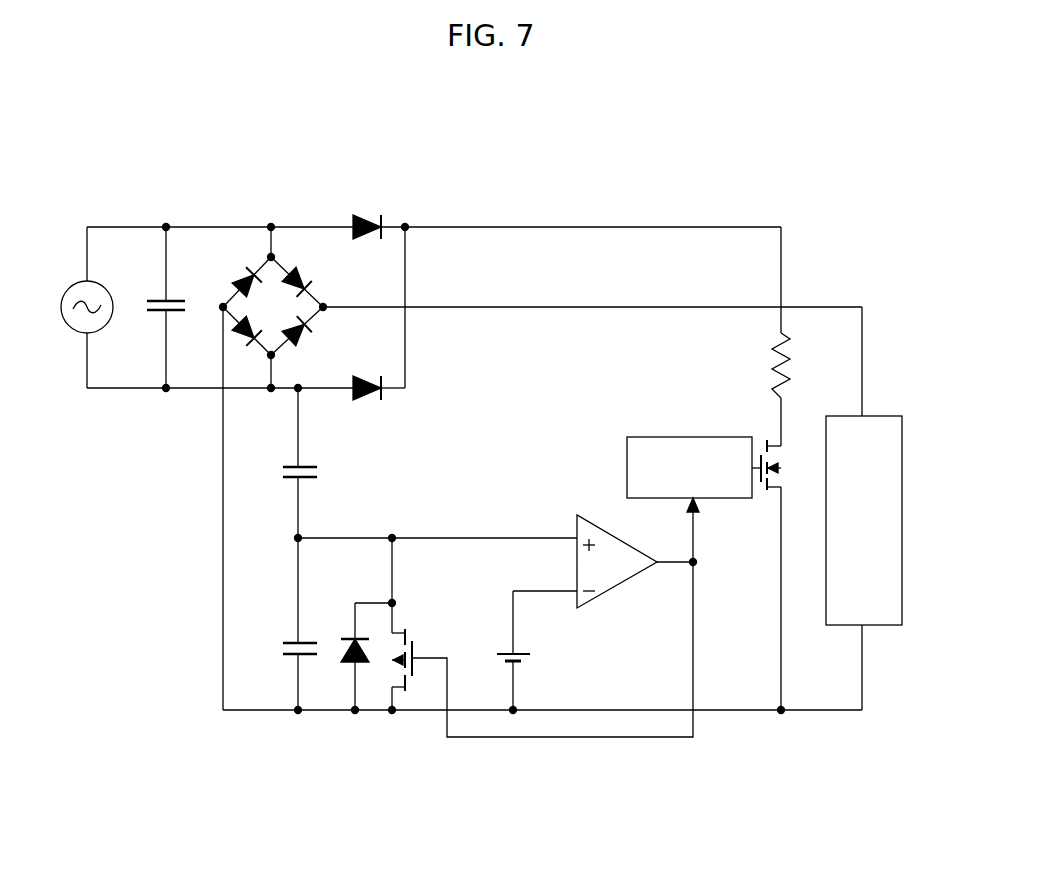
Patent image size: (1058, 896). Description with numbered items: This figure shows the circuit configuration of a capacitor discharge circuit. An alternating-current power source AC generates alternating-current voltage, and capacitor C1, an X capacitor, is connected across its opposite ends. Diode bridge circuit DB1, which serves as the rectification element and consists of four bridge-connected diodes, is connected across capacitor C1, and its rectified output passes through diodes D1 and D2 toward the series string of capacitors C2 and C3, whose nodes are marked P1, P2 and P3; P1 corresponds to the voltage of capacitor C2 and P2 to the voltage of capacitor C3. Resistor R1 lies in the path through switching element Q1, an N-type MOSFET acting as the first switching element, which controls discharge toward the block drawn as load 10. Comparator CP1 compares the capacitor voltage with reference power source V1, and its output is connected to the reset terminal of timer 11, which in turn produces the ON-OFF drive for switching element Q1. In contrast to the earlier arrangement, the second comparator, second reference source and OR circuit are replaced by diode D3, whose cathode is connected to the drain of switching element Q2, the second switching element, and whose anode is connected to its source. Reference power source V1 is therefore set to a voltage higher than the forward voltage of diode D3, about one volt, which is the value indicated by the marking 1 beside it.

The load 10 is at (904, 483).
The timer 11 is at (678, 437).
The 1.0 V reference voltage source V1 1 is at (496, 661).
The capacitor C1 is at (158, 307).
The capacitor C2 is at (285, 486).
The capacitor C3 is at (285, 664).
The diode bridge circuit DB1 is at (273, 292).
The diode D1 is at (366, 212).
The diode D2 is at (366, 402).
The diode D3 is at (345, 656).
The switching element Q1 is at (761, 451).
The switching element Q2 is at (419, 655).
The resistor R1 is at (799, 365).
The comparator CP1 is at (617, 559).
The reference power source V1 is at (496, 661).
The voltage of capacitor C2 P1 is at (298, 434).
The voltage of capacitor C3 P2 is at (298, 581).
The node P3 is at (262, 712).
The alternating-current power source AC is at (78, 295).